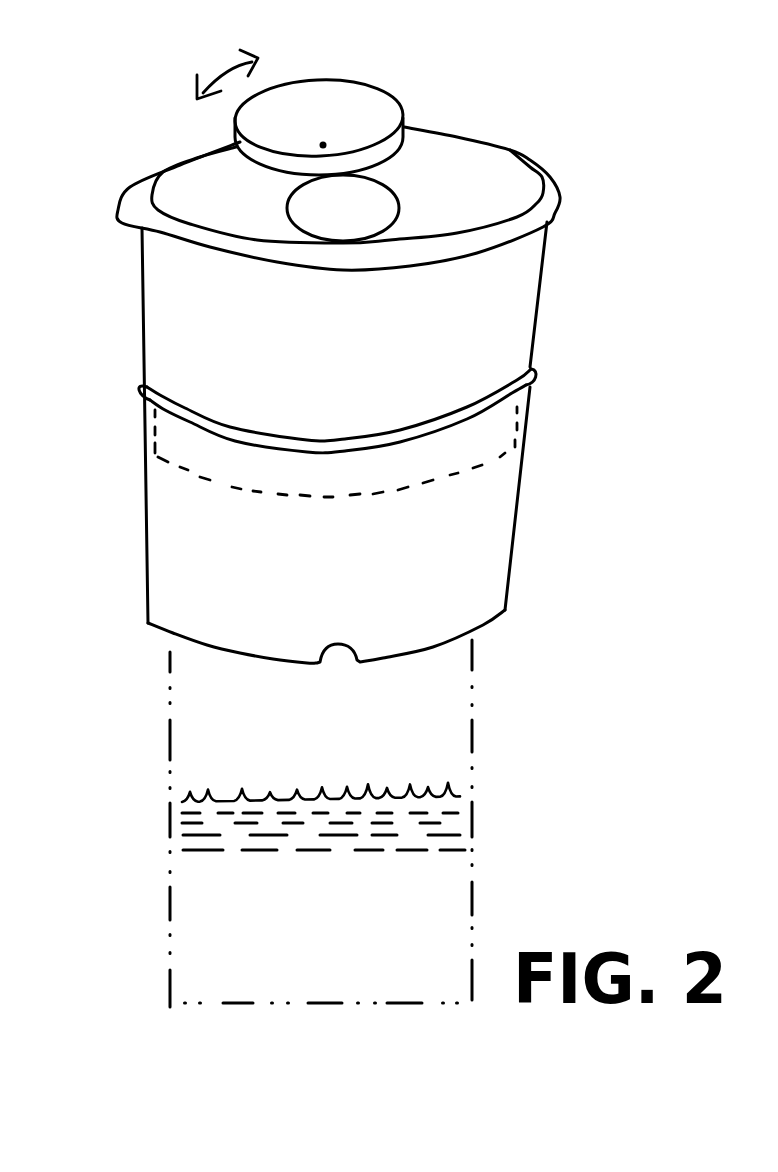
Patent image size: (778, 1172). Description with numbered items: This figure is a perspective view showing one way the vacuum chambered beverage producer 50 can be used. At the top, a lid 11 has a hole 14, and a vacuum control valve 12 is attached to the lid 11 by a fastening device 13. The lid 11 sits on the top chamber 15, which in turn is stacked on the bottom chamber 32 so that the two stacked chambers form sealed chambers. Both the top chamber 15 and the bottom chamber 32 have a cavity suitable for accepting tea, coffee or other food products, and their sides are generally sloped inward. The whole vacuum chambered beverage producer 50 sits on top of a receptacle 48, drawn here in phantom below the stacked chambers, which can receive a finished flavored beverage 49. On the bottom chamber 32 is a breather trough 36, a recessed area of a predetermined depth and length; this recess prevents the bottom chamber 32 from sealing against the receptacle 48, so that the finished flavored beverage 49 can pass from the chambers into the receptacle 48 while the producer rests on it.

The lid 11 is at (513, 150).
The vacuum control valve 12 is at (322, 78).
The fastening device 13 is at (323, 145).
The hole 14 is at (383, 182).
The top chamber 15 is at (142, 319).
The bottom chamber 32 is at (143, 482).
The breather trough 36 is at (320, 651).
The receptacle 48 is at (170, 732).
The finished flavored beverage 49 is at (333, 912).
The vacuum chambered beverage producer 50 is at (576, 433).